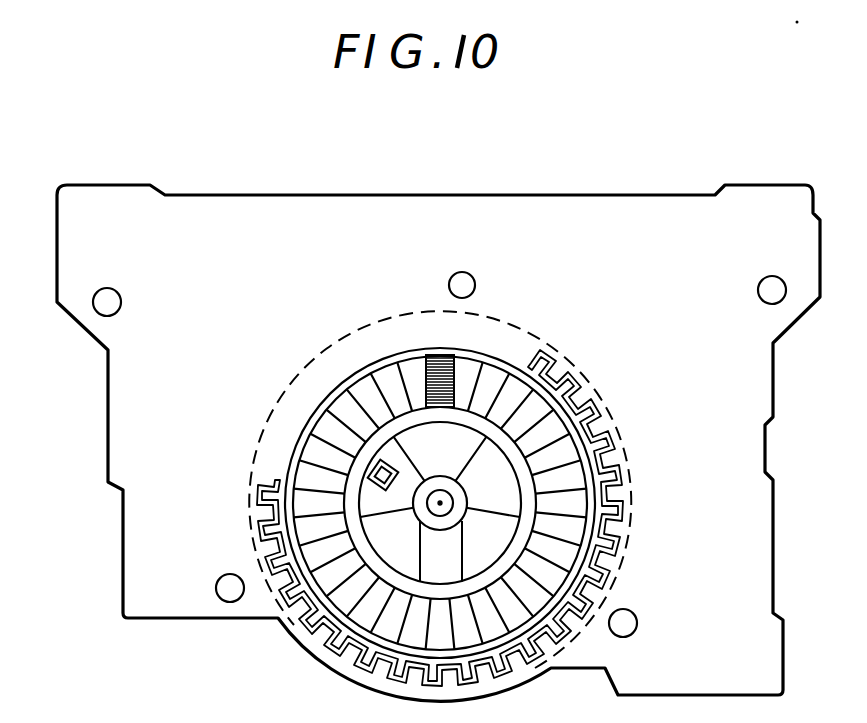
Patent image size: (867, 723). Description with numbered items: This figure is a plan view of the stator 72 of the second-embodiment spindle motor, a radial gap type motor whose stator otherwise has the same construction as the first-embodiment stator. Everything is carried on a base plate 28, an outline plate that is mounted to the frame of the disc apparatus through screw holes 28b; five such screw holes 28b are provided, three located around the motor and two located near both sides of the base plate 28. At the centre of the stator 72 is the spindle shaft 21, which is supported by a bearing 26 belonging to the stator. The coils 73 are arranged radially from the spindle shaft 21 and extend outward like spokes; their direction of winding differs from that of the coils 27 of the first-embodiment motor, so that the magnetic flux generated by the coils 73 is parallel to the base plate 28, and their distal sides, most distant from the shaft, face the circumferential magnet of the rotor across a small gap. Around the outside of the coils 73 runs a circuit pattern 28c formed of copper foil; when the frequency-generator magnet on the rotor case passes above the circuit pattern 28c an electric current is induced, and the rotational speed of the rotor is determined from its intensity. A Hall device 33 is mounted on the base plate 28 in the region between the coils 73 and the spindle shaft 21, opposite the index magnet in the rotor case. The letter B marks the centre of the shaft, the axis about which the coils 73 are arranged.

The stator assembly 72 is at (475, 127).
The base plate 28 is at (528, 218).
The screw holes 28b is at (116, 289).
The circuit pattern 28c is at (577, 385).
The coils 73 is at (390, 365).
The coils 27 is at (458, 366).
The Hall device 33 is at (372, 470).
The spindle shaft 21 is at (438, 497).
The bearing 26 is at (410, 517).
The center point B is at (442, 506).